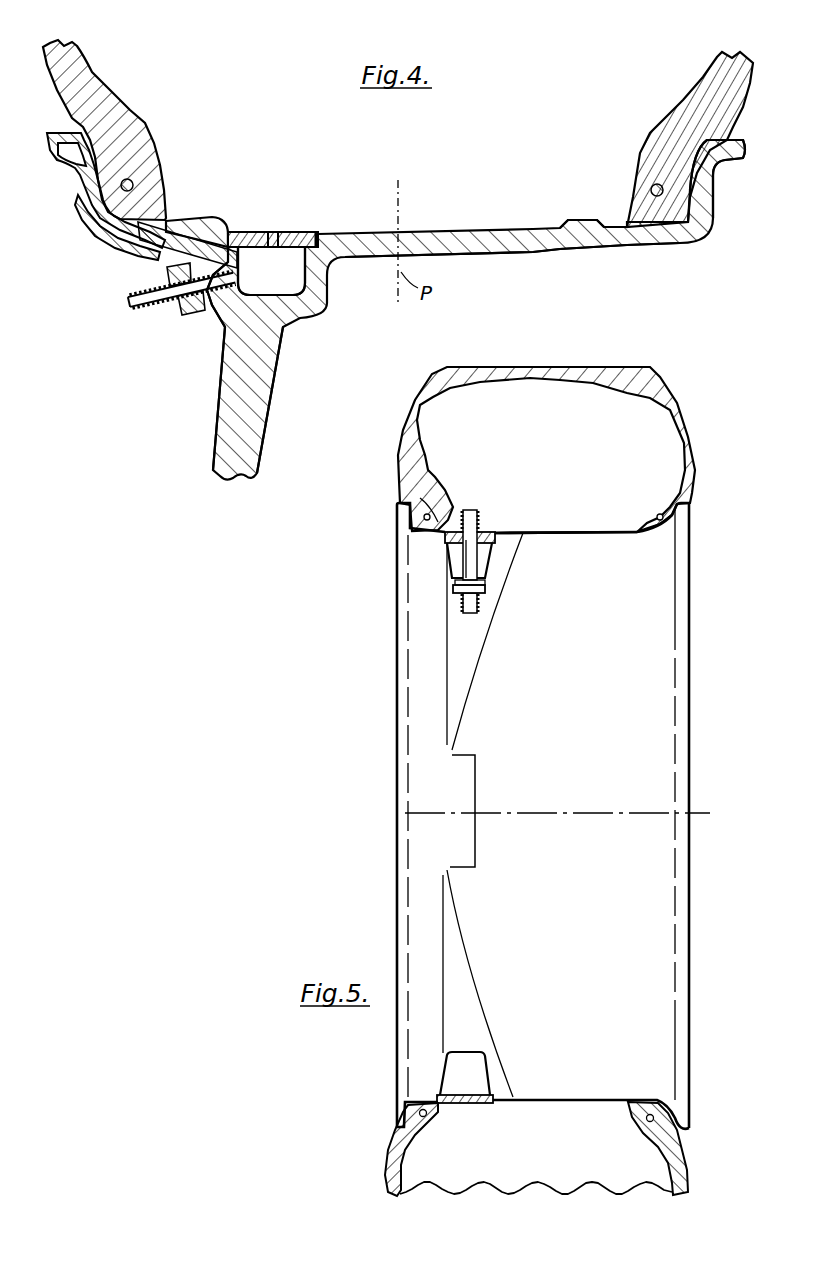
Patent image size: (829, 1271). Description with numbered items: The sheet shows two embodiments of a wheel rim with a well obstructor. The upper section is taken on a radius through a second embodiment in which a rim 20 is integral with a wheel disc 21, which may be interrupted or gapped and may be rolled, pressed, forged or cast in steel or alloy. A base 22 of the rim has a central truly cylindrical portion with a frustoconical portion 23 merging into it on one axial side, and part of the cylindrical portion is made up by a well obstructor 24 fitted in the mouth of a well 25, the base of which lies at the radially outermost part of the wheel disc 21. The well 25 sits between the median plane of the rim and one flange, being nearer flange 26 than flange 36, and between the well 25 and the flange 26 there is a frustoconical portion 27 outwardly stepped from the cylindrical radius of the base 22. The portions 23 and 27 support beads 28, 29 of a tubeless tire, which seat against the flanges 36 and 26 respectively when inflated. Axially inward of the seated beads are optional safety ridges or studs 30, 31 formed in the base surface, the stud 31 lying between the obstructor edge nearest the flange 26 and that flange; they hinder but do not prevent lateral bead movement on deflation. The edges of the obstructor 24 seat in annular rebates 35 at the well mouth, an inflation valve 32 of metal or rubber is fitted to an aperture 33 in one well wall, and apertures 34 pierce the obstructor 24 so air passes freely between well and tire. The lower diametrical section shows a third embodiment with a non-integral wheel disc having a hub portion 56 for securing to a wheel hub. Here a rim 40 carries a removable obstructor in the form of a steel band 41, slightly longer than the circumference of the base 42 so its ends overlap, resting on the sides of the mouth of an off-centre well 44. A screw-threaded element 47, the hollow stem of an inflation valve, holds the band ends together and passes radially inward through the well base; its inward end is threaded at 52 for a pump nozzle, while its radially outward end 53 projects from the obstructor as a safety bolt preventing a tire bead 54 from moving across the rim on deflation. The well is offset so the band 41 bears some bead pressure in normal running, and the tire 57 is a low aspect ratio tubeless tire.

In FIG. 4, the rim 20 is at (417, 190).
In FIG. 4, the wheel disc 21 is at (266, 417).
In FIG. 4, the base 22 is at (372, 254).
In FIG. 4, the frustoconical portion 23 is at (575, 250).
In FIG. 4, the well obstructor 24 is at (300, 235).
In FIG. 4, the well 25 is at (289, 284).
In FIG. 4, the flange 26 is at (87, 187).
In FIG. 4, the frustoconical portion 27 is at (137, 242).
In FIG. 4, the bead 28 is at (675, 115).
In FIG. 4, the bead 29 is at (145, 157).
In FIG. 4, the safety ridge or stud 30 is at (580, 220).
In FIG. 4, the safety ridge or stud 31 is at (200, 217).
In FIG. 4, the inflation valve 32 is at (190, 314).
In FIG. 4, the aperture 33 is at (222, 298).
In FIG. 4, the aperture 34 is at (273, 238).
In FIG. 4, the annular rebate 35 is at (320, 240).
In FIG. 4, the flange 36 is at (710, 182).
In FIG. 5, the rim 40 is at (620, 534).
In FIG. 5, the steel band 41 is at (481, 535).
In FIG. 5, the base 42 is at (553, 532).
In FIG. 5, the off-centre well 44 is at (440, 552).
In FIG. 5, the screw-threaded element 47 is at (465, 559).
In FIG. 5, the screw-threaded end 52 is at (461, 610).
In FIG. 5, the radially outward end 53 is at (471, 510).
In FIG. 5, the tire bead 54 is at (422, 498).
In FIG. 5, the hub portion 56 is at (467, 782).
In FIG. 5, the tire 57 is at (667, 391).